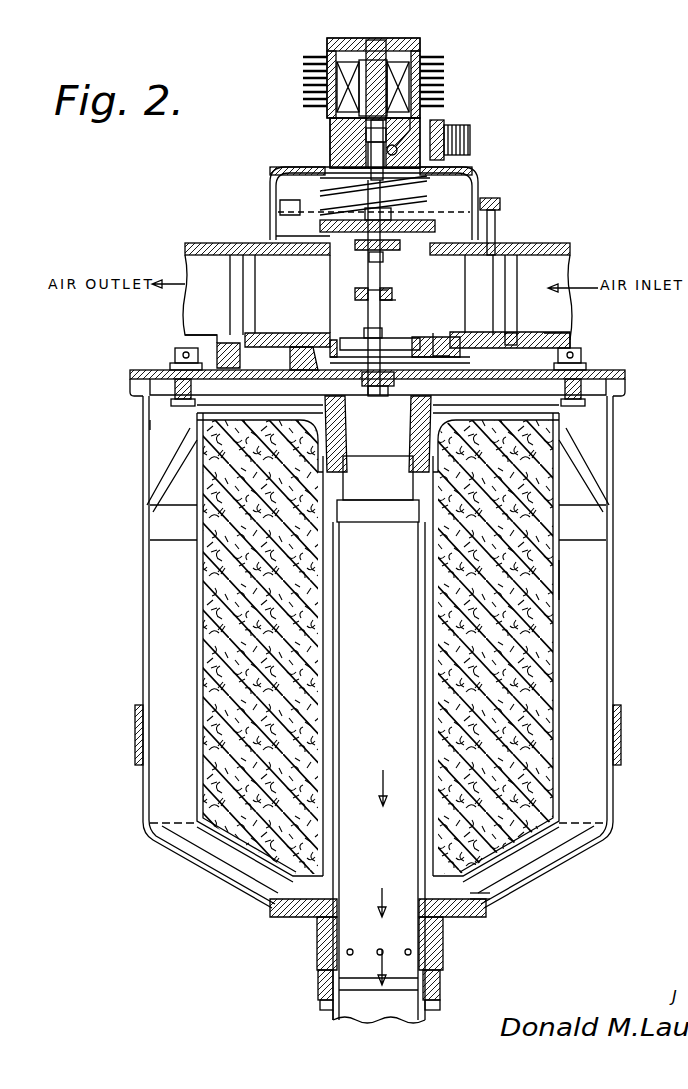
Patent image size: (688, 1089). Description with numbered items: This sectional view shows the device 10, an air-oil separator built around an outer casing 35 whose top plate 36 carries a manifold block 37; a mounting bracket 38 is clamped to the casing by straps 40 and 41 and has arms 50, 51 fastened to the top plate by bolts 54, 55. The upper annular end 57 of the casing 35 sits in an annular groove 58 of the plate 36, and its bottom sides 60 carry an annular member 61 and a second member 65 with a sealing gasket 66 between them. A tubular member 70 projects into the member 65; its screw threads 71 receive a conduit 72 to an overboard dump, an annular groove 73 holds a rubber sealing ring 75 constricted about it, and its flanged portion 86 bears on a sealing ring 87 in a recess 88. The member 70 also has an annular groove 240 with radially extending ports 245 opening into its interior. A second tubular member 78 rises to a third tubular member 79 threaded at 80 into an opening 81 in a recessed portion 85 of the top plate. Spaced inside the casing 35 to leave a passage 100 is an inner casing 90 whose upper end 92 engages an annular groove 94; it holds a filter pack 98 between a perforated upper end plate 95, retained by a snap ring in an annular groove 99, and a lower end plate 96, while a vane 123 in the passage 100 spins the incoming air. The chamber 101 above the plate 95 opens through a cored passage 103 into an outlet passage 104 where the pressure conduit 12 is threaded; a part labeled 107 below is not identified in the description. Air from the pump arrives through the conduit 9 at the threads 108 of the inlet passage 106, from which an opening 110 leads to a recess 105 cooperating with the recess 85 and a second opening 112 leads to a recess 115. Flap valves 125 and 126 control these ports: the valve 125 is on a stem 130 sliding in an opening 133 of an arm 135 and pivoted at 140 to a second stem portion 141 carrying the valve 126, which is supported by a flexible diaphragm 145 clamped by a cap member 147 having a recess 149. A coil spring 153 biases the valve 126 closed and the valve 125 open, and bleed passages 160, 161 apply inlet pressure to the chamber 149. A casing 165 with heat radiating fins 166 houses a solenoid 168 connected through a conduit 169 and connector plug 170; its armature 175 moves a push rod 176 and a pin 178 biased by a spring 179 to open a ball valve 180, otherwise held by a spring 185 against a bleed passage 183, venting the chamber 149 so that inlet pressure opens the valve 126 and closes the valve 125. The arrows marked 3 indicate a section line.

The section line 3 is at (356, 8).
The pressure conduit 9 is at (560, 264).
The device 10 is at (132, 548).
The pressure conduit 12 is at (198, 245).
The casing 35 is at (143, 472).
The top plate 36 is at (135, 374).
The manifold block 37 is at (518, 243).
The mounting bracket 38 is at (576, 347).
The strap 40 is at (137, 740).
The strap 41 is at (623, 740).
The projecting arm 50 is at (172, 357).
The projecting arm 51 is at (582, 366).
The bolt 54 is at (172, 345).
The bolt 55 is at (572, 345).
The upper annular end 57 is at (150, 398).
The annular groove 58 is at (178, 404).
The inwardly and downwardly extending sides 60 is at (196, 846).
The annular member 61 is at (478, 912).
The second member 65 is at (446, 950).
The sealing gasket 66 is at (478, 926).
The tubular member 70 is at (438, 988).
The screw threads 71 is at (440, 1010).
The conduit 72 is at (335, 1012).
The annular groove 73 is at (318, 945).
The annular sealing ring 75 is at (316, 932).
The second tubular member 78 is at (420, 712).
The third tubular member 79 is at (330, 500).
The screw threaded engagement 80 is at (496, 395).
The opening 81 is at (367, 385).
The recessed portion 85 is at (374, 433).
The flanged portion 86 is at (318, 1003).
The sealing ring 87 is at (324, 974).
The recess 88 is at (442, 972).
The second casing 90 is at (565, 616).
The upper annular end 92 is at (580, 414).
The annular groove 94 is at (582, 392).
The upper end plate 95 is at (380, 647).
The lower end plate 96 is at (244, 858).
The filter pack 98 is at (296, 668).
The annular groove 99 is at (190, 420).
The passage 100 is at (184, 700).
The chamber 101 is at (284, 405).
The cored passage 103 is at (252, 326).
The outlet passage 104 is at (300, 291).
The recess 105 is at (322, 345).
The air inlet passage 106 is at (449, 306).
The block 107 is at (278, 370).
The screw threads 108 is at (548, 250).
The opening 110 is at (346, 350).
The second opening 112 is at (410, 250).
The recess 115 is at (303, 237).
The radial vane 123 is at (612, 512).
The flap valve member 125 is at (394, 387).
The flap valve member 126 is at (370, 274).
The stem 130 is at (382, 318).
The opening 133 is at (370, 285).
The arm 135 is at (392, 298).
The pivotal connection 140 is at (388, 292).
The second stem portion 141 is at (403, 240).
The flexible diaphragm member 145 is at (409, 240).
The cap member 147 is at (478, 168).
The recess 149 is at (478, 195).
The coil spring 153 is at (290, 200).
The bleed passage 160 is at (500, 235).
The bleed passage 161 is at (495, 218).
The casing 165 is at (425, 56).
The heat radiating fins 166 is at (440, 70).
The solenoid 168 is at (345, 68).
The conduit 169 is at (440, 100).
The connector plug 170 is at (470, 132).
The armature 175 is at (386, 42).
The push rod 176 is at (346, 130).
The pin 178 is at (362, 138).
The spring 179 is at (342, 170).
The ball valve 180 is at (402, 139).
The second bleed passage 183 is at (367, 152).
The spring 185 is at (458, 206).
The annular groove 240 is at (377, 921).
The radially extending ports 245 is at (378, 970).